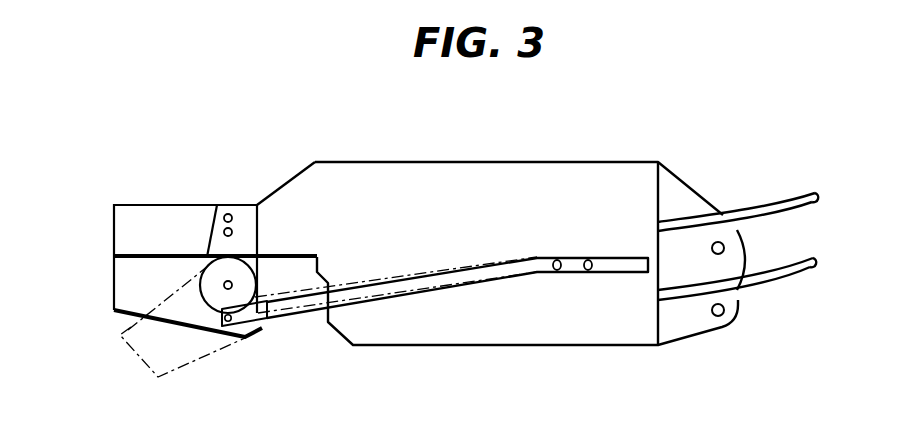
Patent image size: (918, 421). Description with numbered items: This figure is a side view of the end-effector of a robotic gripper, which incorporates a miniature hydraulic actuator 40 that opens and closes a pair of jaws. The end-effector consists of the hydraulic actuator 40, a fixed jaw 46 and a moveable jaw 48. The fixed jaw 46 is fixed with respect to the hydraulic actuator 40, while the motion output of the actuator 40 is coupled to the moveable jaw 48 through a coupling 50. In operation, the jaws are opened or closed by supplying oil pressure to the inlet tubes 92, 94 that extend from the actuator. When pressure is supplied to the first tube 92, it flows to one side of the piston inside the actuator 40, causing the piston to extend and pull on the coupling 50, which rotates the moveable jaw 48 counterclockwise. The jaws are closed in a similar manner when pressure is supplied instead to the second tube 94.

The hydraulic actuator 40 is at (462, 187).
The fixed jaw 46 is at (127, 227).
The moveable jaw 48 is at (130, 285).
The coupling 50 is at (283, 318).
The first tube 92 is at (815, 200).
The second tube 94 is at (813, 264).